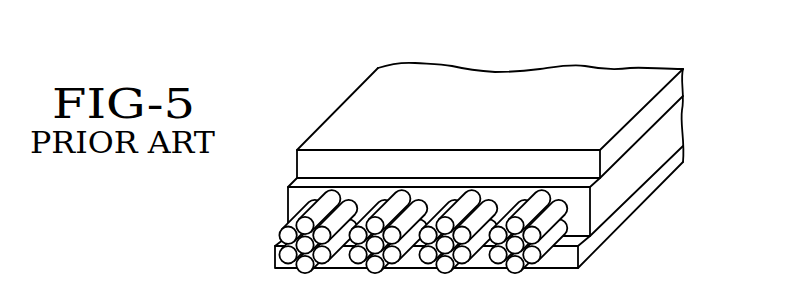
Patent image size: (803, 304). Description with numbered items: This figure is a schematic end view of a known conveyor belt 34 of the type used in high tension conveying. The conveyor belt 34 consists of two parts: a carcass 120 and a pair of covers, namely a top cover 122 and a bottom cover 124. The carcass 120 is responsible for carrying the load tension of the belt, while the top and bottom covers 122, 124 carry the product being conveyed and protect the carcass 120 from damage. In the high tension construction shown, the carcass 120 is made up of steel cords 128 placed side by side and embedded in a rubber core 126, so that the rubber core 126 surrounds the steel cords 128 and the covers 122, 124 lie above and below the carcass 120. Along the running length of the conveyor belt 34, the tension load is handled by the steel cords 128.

The conveyor belt 34 is at (342, 93).
The carcass 120 is at (664, 152).
The top cover 122 is at (528, 91).
The bottom cover 124 is at (561, 259).
The rubber core 126 is at (294, 198).
The steel cords 128 is at (279, 233).